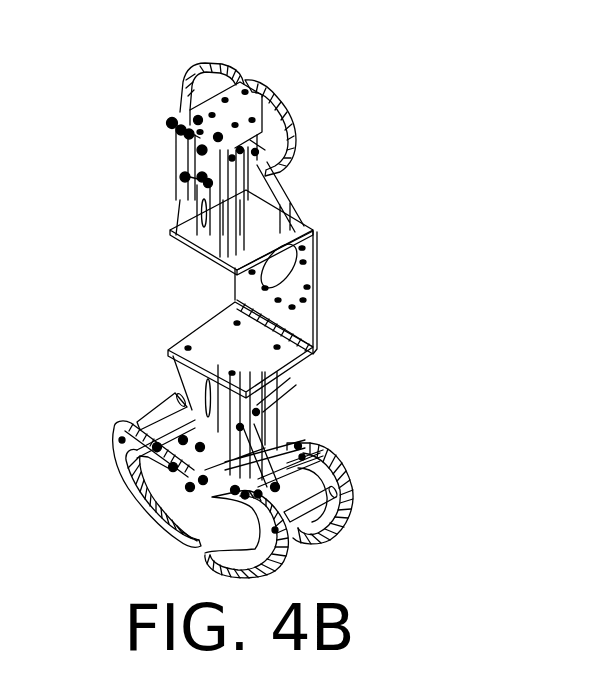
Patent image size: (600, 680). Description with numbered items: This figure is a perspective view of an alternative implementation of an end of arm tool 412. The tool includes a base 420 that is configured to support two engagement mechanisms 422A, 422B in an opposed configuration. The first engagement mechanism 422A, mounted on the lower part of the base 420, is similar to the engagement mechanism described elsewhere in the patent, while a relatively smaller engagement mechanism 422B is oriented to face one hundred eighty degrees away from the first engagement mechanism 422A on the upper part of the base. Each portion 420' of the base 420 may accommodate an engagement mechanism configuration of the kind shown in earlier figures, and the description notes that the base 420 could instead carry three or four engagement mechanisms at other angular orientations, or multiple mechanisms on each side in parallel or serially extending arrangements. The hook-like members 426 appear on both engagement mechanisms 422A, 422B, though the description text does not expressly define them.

The end of arm tool 412 is at (235, 25).
The base 420 is at (320, 292).
The portion of base 420' is at (221, 294).
The first engagement mechanism 422A is at (328, 402).
The engagement mechanism 422B is at (313, 142).
The hook member 426 is at (177, 110).